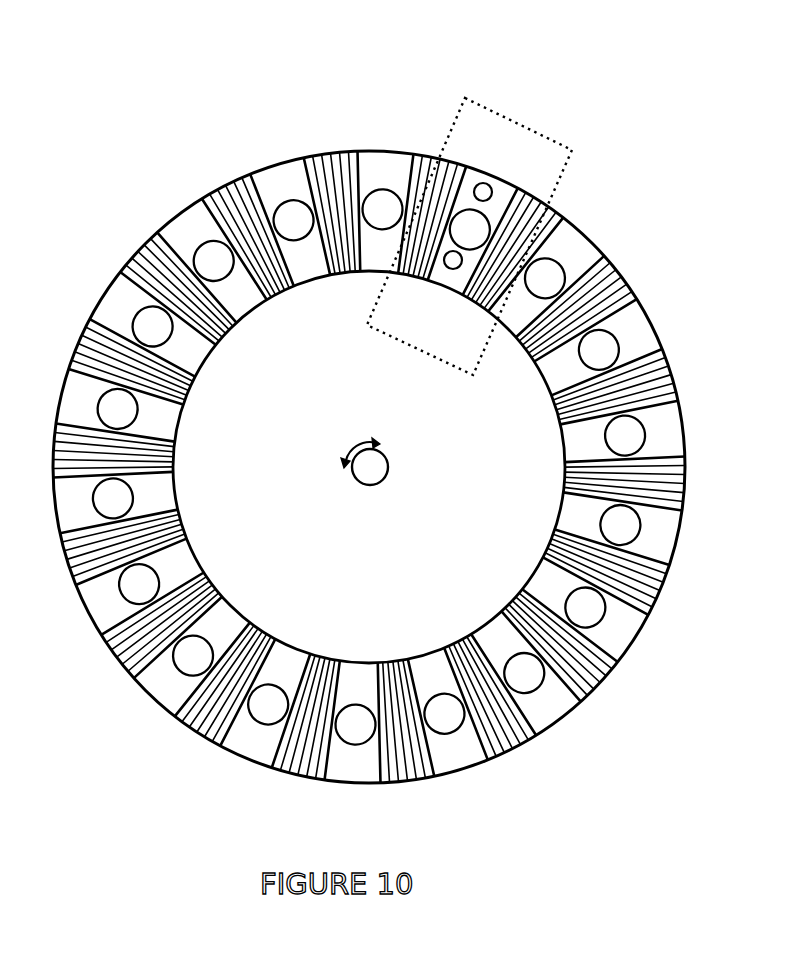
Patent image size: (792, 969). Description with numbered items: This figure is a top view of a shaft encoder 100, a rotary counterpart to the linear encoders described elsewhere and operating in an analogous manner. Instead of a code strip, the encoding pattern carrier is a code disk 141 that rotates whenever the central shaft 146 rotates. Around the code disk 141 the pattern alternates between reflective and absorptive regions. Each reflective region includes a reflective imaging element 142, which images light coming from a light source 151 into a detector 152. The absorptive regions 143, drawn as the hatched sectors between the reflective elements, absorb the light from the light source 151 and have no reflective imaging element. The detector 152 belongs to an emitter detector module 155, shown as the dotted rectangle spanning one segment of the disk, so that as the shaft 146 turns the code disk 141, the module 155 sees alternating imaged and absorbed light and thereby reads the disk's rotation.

The shaft encoder 100 is at (172, 114).
The code disk 141 is at (578, 708).
The reflective imaging element 142 is at (608, 613).
The absorptive regions 143 is at (668, 481).
The shaft 146 is at (388, 456).
The light source 151 is at (450, 264).
The detector 152 is at (483, 192).
The emitter detector module 155 is at (563, 175).